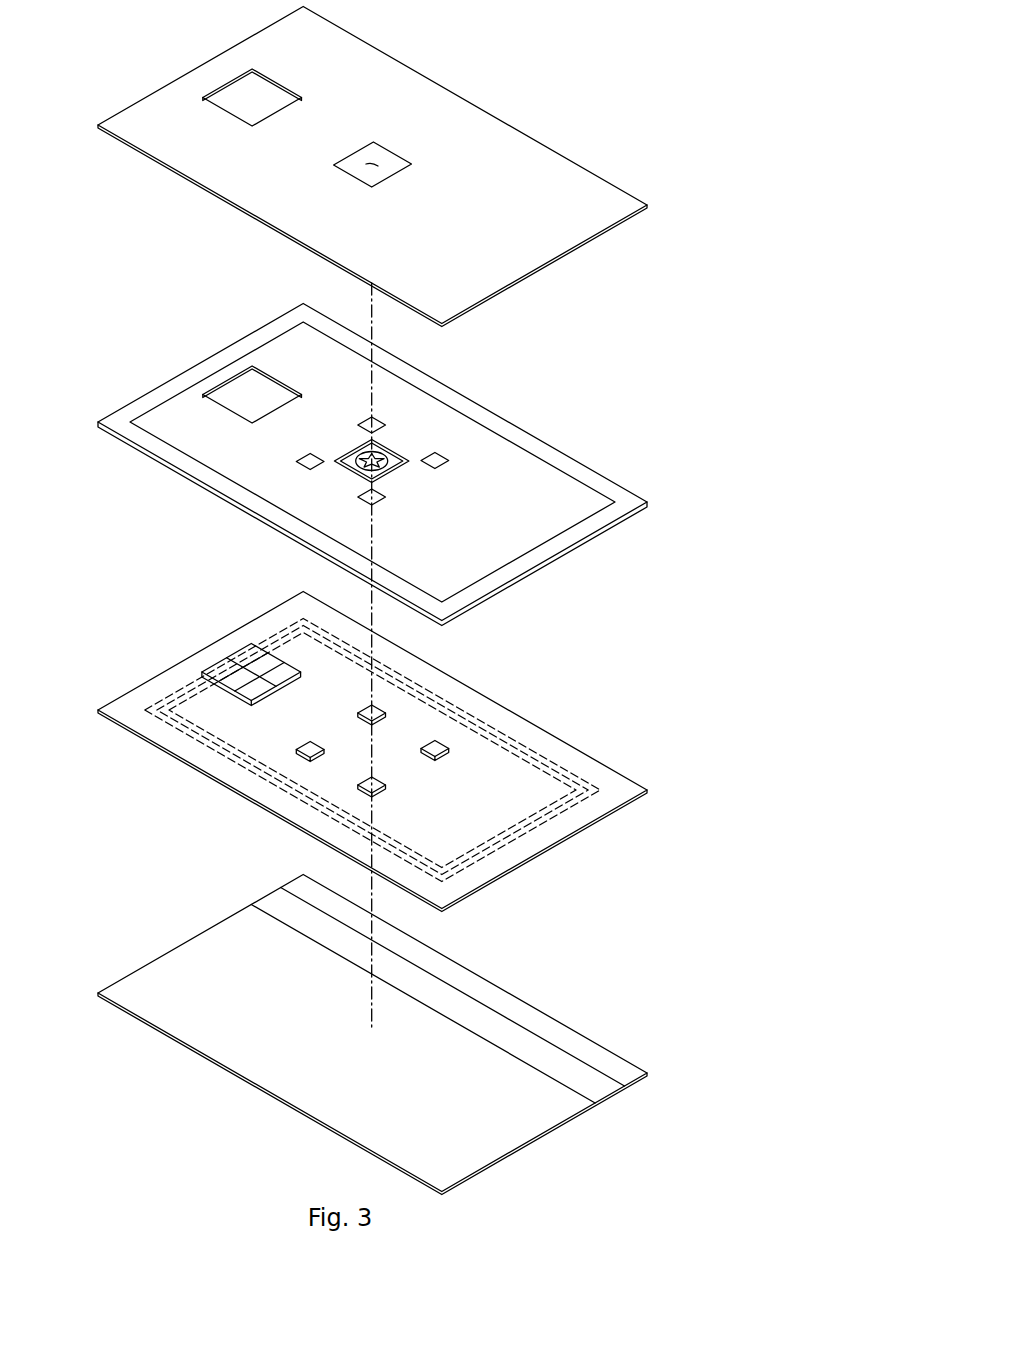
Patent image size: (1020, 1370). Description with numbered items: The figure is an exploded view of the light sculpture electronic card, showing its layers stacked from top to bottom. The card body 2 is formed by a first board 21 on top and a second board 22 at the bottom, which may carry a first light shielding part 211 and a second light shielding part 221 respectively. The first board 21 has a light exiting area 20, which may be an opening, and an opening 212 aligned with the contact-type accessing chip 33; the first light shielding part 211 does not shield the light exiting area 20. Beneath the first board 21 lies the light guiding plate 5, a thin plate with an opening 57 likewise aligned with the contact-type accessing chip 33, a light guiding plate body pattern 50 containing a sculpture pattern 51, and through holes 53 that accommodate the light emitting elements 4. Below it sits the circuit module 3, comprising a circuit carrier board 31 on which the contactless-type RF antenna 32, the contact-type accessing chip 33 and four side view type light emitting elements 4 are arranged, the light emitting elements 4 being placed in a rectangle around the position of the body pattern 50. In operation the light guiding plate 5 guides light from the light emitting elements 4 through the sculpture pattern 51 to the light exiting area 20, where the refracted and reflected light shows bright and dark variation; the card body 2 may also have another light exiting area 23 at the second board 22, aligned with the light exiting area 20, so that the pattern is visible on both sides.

The card body 2 is at (110, 80).
The first board 21 is at (478, 102).
The first light shielding part 211 is at (611, 192).
The opening 212 is at (250, 98).
The light exiting area 20 is at (378, 156).
The second board 22 is at (604, 1057).
The second light shielding part 221 is at (273, 1103).
The light guiding plate 5 is at (543, 477).
The light exiting area 23 is at (615, 530).
The opening 57 is at (245, 390).
The light guiding plate body pattern 50 is at (393, 450).
The sculpture pattern 51 is at (358, 467).
The through hole 53 is at (438, 453).
The circuit module 3 is at (95, 681).
The circuit carrier board 31 is at (647, 797).
The contactless-type RF antenna 32 is at (503, 838).
The contact-type accessing chip 33 is at (243, 670).
The light emitting element 4 is at (302, 743).